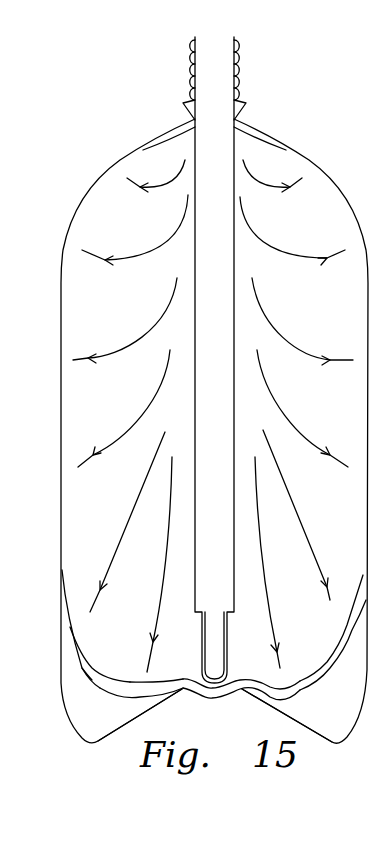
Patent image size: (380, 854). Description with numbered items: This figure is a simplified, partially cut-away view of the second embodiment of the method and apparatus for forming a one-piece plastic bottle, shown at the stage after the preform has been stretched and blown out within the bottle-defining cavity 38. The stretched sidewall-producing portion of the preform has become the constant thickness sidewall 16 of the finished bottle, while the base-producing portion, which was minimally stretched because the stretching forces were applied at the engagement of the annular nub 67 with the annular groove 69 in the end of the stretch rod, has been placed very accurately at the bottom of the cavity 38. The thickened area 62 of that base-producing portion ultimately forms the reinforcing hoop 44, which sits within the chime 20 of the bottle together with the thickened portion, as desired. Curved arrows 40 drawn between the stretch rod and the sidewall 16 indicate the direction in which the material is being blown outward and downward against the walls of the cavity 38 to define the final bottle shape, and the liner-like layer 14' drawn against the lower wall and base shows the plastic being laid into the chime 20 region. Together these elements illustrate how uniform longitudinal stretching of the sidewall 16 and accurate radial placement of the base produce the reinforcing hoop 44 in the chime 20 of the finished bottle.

The sidewall 16 is at (62, 343).
The inner liner 14' is at (146, 572).
The flow path 40 is at (165, 182).
The annular groove 69 is at (198, 614).
The annular nub 67 is at (112, 680).
The thickened area 62 is at (263, 685).
The reinforcing hoop 44 is at (325, 673).
The chime 20 is at (92, 680).
The bottle-defining cavity 38 is at (92, 712).